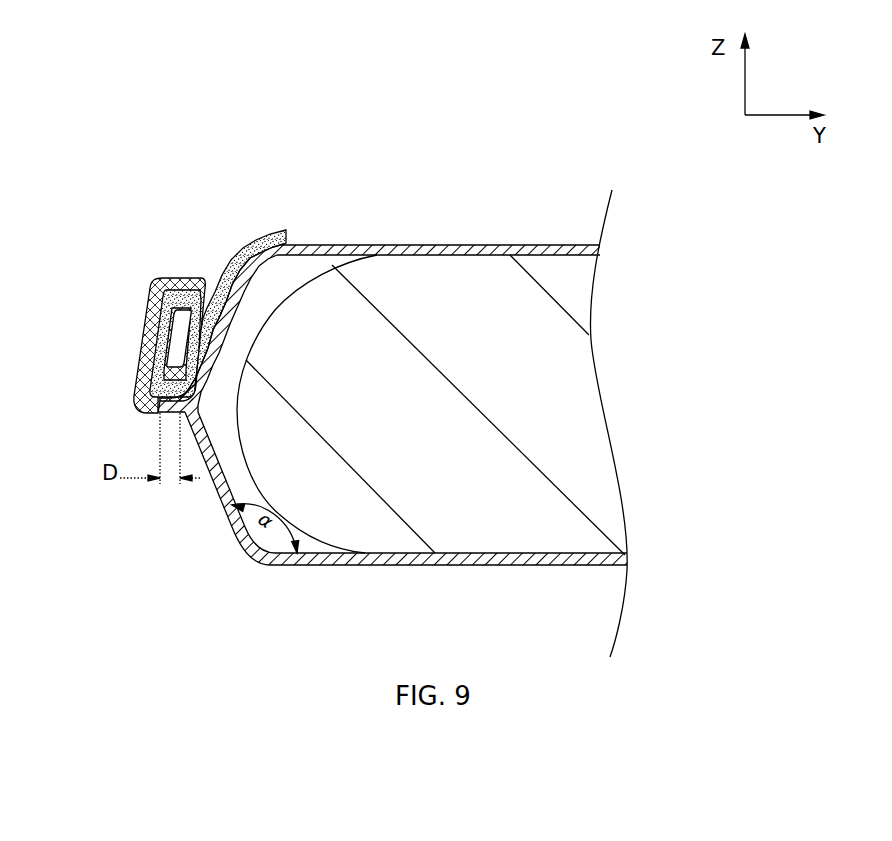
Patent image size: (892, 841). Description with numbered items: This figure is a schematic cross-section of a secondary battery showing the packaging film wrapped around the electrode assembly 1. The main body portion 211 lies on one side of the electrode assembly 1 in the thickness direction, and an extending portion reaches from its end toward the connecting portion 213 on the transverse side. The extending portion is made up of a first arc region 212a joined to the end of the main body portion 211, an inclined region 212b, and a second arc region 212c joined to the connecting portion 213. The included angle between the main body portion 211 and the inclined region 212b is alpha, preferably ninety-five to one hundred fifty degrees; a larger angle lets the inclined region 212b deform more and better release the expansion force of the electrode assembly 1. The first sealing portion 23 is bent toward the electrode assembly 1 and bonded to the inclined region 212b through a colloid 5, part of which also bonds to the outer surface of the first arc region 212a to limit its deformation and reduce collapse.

The electrode assembly 1 is at (600, 455).
The colloid 5 is at (228, 258).
The first sealing portion 23 is at (140, 335).
The main body portion 211 is at (517, 245).
The first arc region 212a is at (248, 558).
The inclined region 212b is at (227, 506).
The second arc region 212c is at (203, 412).
The connecting portion 213 is at (138, 378).